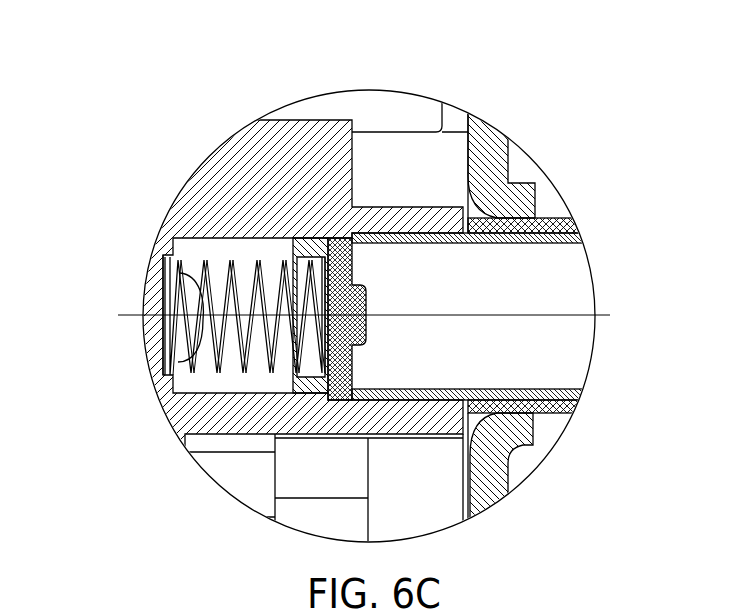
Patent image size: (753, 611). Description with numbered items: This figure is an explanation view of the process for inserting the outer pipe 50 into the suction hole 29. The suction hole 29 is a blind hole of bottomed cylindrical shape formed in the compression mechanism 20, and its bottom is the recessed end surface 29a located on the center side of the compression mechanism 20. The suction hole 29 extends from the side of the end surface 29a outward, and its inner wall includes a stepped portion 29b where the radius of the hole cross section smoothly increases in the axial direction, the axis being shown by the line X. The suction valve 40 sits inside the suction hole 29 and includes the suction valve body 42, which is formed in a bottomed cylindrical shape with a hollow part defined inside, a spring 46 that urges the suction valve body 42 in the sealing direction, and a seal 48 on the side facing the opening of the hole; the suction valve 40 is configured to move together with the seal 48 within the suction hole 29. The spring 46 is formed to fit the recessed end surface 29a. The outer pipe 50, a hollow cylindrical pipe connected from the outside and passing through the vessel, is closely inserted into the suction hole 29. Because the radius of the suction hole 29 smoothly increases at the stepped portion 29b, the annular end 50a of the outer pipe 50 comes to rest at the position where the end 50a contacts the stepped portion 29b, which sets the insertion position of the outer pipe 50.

The compression mechanism 20 is at (172, 197).
The suction hole 29 is at (427, 340).
The end surface 29a is at (150, 384).
The stepped portion 29b is at (277, 440).
The suction valve 40 is at (422, 42).
The suction valve body 42 is at (334, 243).
The spring 46 is at (232, 262).
The seal 48 is at (346, 240).
The outer pipe 50 is at (493, 389).
The end of the outer pipe 50a is at (355, 252).
The line X is at (560, 317).